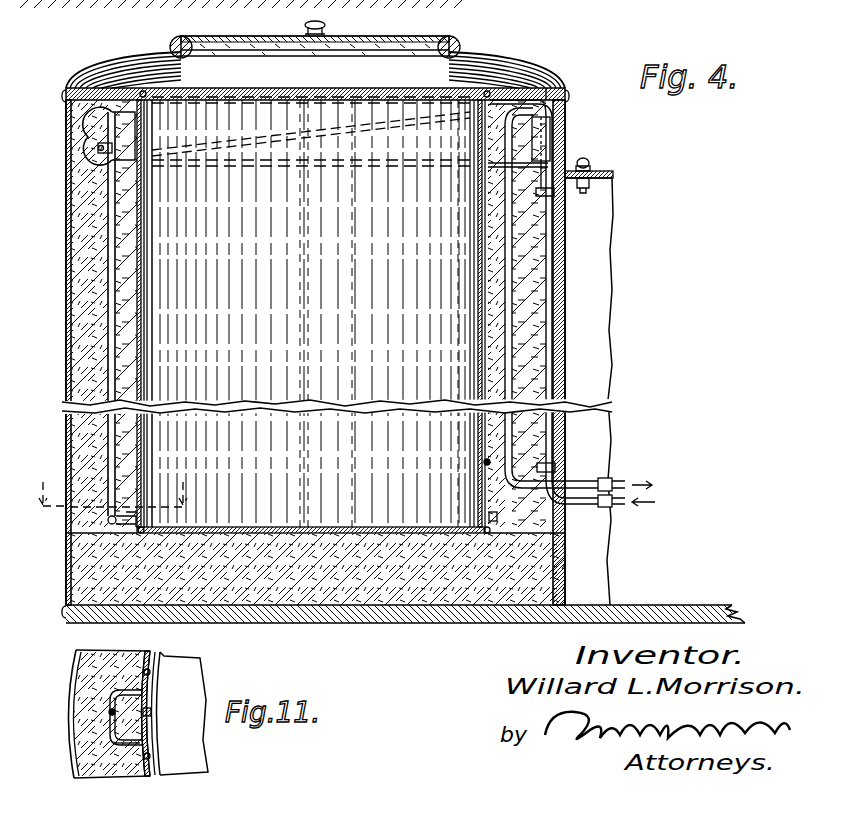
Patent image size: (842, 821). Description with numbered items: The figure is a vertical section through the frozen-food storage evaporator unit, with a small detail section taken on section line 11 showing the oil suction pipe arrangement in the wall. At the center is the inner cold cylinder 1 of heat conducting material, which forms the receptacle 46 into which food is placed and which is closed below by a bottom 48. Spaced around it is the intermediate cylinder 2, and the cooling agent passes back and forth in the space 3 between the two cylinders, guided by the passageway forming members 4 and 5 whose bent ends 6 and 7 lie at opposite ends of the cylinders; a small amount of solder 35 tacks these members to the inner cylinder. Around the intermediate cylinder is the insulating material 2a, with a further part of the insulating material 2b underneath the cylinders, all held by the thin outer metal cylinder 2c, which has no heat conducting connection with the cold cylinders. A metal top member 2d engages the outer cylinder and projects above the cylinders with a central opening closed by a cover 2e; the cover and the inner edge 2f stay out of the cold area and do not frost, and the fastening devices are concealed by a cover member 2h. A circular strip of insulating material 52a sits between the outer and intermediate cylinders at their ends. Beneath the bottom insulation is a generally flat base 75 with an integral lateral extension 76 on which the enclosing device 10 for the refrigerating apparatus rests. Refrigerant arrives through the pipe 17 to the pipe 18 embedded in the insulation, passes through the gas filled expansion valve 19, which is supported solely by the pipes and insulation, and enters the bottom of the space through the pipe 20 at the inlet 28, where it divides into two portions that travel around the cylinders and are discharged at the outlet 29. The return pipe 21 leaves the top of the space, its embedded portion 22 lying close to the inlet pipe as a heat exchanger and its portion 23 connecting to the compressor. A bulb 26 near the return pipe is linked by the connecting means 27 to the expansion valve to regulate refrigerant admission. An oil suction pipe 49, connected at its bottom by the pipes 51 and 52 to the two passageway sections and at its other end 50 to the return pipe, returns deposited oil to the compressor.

In FIG. 4, the inner cold cylinder 1 is at (153, 198).
In FIG. 11, the inner cold cylinder 1 is at (161, 690).
In FIG. 4, the intermediate cylinder 2 is at (82, 196).
In FIG. 11, the intermediate cylinder 2 is at (140, 700).
In FIG. 4, the insulating material 2a is at (80, 222).
In FIG. 11, the insulating material 2a is at (92, 660).
In FIG. 4, the insulating material 2b is at (340, 600).
In FIG. 4, the outer metal cylinder 2c is at (68, 262).
In FIG. 11, the outer metal cylinder 2c is at (70, 698).
In FIG. 4, the top member 2d is at (517, 57).
In FIG. 4, the cover 2e is at (420, 38).
In FIG. 4, the inner edge 2f is at (457, 56).
In FIG. 4, the cover member 2h is at (62, 97).
In FIG. 4, the space 3 is at (150, 128).
In FIG. 11, the space 3 is at (146, 735).
In FIG. 4, the passageway forming members 4 is at (494, 268).
In FIG. 11, the passageway forming members 4 is at (152, 713).
In FIG. 4, the passageway forming members 5 is at (148, 286).
In FIG. 11, the passageway forming members 5 is at (150, 672).
In FIG. 4, the bent end 6 is at (144, 533).
In FIG. 4, the bent end 7 is at (142, 90).
In FIG. 4, the enclosing device 10 is at (604, 186).
In FIG. 4, the section line 11 is at (115, 485).
In FIG. 4, the pipe 17 is at (592, 512).
In FIG. 4, the pipe 18 is at (540, 282).
In FIG. 4, the expansion valve 19 is at (552, 135).
In FIG. 4, the pipe 20 is at (520, 240).
In FIG. 4, the return pipe 21 is at (88, 130).
In FIG. 4, the portion of return pipe 22 is at (554, 315).
In FIG. 4, the portion of return pipe 23 is at (590, 485).
In FIG. 4, the bulb 26 is at (98, 148).
In FIG. 4, the connecting means 27 is at (346, 126).
In FIG. 4, the inlet 28 is at (489, 517).
In FIG. 4, the outlet 29 is at (143, 118).
In FIG. 4, the solder 35 is at (490, 465).
In FIG. 4, the receptacle 46 is at (312, 313).
In FIG. 4, the bottom 48 is at (326, 526).
In FIG. 11, the bottom 48 is at (208, 752).
In FIG. 4, the oil suction pipe 49 is at (110, 340).
In FIG. 11, the oil suction pipe 49 is at (110, 712).
In FIG. 4, the end of oil suction pipe 50 is at (110, 112).
In FIG. 4, the pipe 51 is at (122, 528).
In FIG. 11, the pipe 51 is at (125, 690).
In FIG. 11, the pipe 52 is at (118, 744).
In FIG. 4, the circular strip of insulating material 52a is at (548, 86).
In FIG. 4, the base 75 is at (436, 614).
In FIG. 4, the lateral extension 76 is at (735, 617).